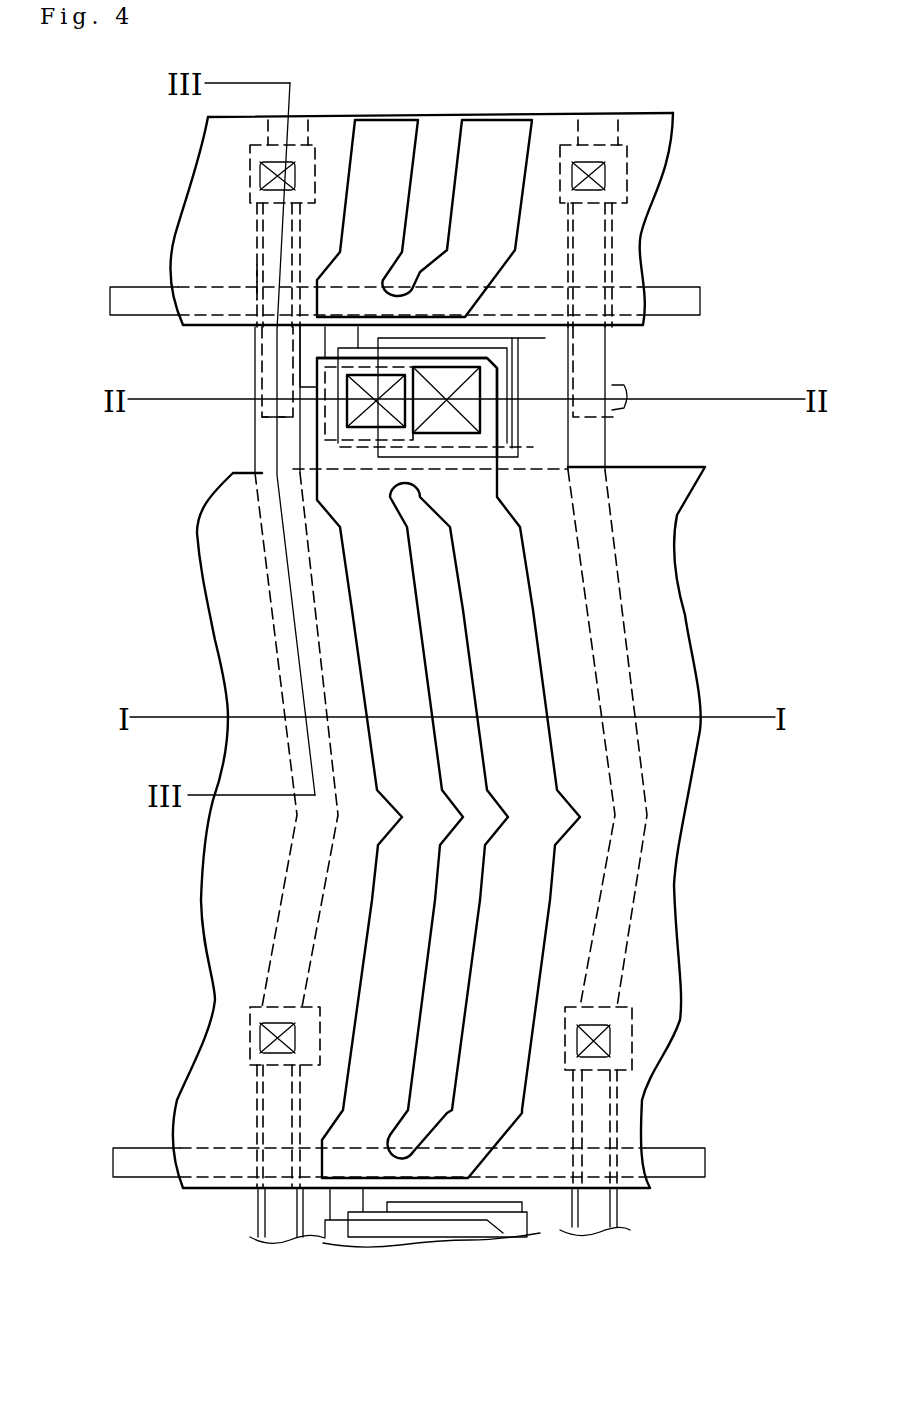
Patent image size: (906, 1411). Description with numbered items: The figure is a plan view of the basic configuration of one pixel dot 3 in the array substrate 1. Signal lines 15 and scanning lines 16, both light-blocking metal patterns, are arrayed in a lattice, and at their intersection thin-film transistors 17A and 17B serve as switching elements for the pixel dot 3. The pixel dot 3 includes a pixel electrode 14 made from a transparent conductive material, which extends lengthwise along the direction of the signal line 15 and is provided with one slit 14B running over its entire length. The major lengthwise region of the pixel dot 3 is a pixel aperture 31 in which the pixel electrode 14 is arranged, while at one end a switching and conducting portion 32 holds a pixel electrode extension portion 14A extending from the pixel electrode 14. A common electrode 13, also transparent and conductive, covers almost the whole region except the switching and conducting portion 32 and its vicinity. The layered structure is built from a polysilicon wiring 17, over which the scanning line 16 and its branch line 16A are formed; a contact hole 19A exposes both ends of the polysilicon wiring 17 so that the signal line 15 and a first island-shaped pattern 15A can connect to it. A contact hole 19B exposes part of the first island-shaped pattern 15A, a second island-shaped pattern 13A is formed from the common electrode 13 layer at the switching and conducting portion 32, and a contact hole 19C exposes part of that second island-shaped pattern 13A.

The array substrate 1 is at (142, 114).
The pixel dot 3 is at (777, 443).
The common electrode 13 is at (193, 230).
The second island-shaped pattern 13A is at (512, 363).
The pixel electrode 14 is at (493, 655).
The pixel electrode extension portion 14A is at (488, 386).
The slit 14B is at (455, 925).
The signal line 15 is at (587, 433).
The first island-shaped pattern 15A is at (518, 340).
The scanning line 16 is at (150, 298).
The branch line 16A is at (325, 340).
The polysilicon wiring 17 is at (300, 393).
The thin-film transistor 17A is at (254, 284).
The thin-film transistor 17B is at (322, 422).
The contact hole 19A is at (287, 178).
The contact hole 19B is at (286, 467).
The contact hole 19C is at (253, 422).
The pixel aperture 31 is at (532, 511).
The switching and conducting portion 32 is at (528, 438).